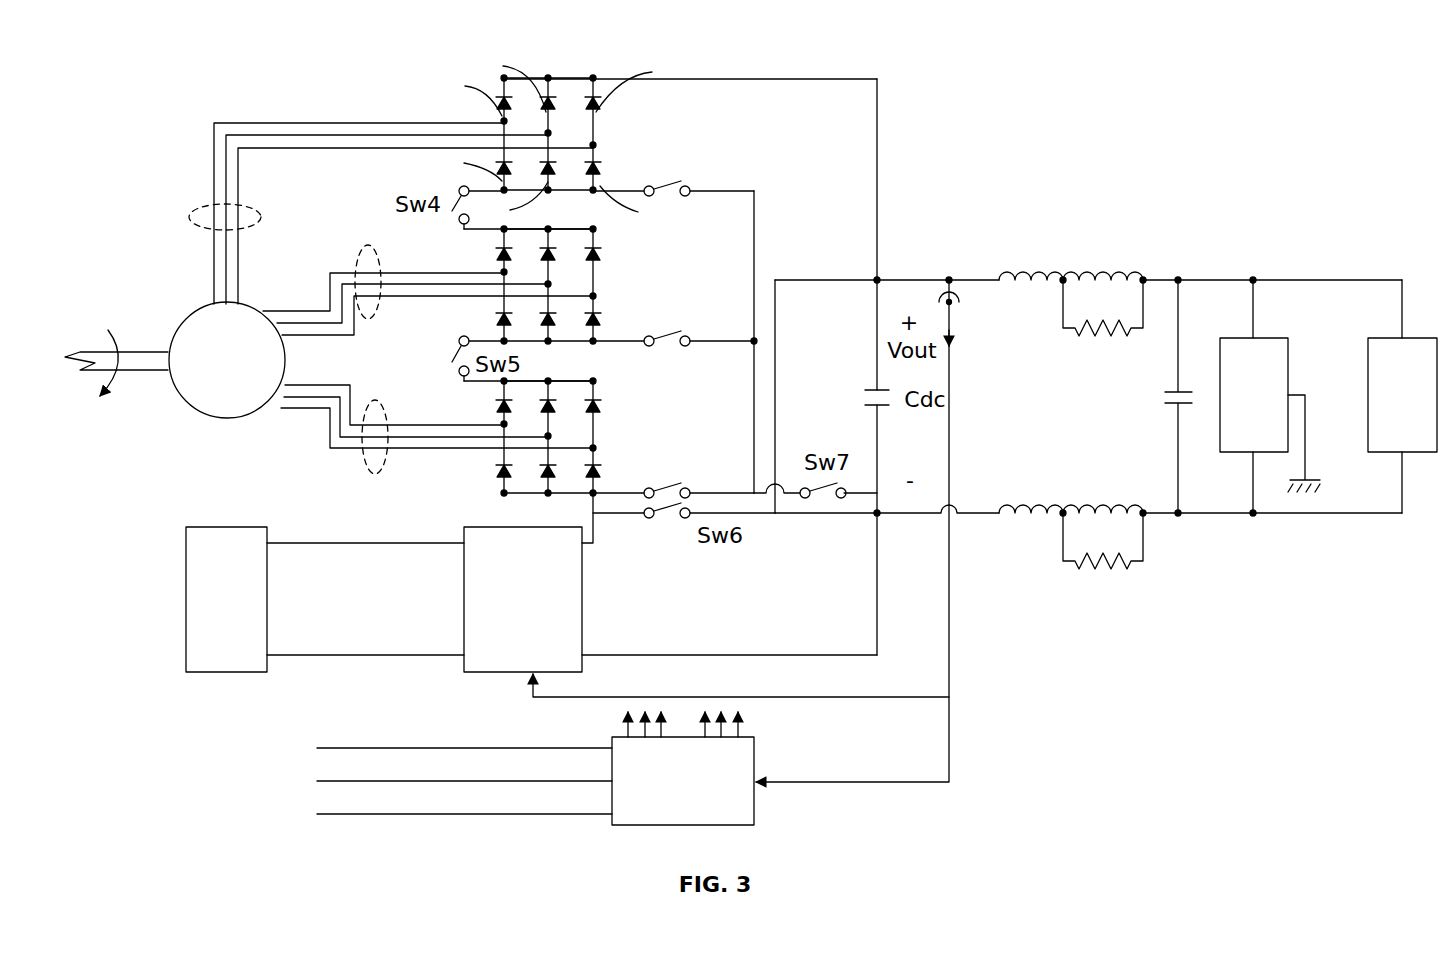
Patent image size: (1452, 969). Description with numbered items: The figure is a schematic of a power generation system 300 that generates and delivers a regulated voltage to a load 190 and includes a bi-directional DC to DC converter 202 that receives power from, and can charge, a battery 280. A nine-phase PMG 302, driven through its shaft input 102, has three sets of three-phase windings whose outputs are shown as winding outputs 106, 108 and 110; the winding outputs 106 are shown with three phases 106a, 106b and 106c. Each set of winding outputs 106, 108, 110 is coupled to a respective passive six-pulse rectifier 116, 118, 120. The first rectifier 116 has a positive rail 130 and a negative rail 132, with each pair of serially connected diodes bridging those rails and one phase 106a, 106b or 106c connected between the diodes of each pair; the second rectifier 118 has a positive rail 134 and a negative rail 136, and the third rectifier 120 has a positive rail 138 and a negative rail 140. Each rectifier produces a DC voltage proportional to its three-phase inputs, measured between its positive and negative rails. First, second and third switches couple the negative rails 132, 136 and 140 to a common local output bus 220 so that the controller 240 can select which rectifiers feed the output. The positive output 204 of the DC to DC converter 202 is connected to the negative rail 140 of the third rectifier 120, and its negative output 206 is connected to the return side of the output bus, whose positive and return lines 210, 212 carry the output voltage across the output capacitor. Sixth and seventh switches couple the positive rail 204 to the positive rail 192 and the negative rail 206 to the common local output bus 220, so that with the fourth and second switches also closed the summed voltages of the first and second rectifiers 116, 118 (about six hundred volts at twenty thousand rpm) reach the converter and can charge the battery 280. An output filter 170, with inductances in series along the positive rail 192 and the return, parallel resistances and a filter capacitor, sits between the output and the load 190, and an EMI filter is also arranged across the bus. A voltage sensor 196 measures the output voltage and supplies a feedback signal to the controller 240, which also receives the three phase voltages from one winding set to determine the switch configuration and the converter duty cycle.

The shaft / mechanical input 102 is at (124, 355).
The winding outputs 106 is at (356, 208).
The phase output 106a is at (225, 166).
The phase output 106b is at (213, 136).
The phase output 106c is at (240, 178).
The winding outputs 108 is at (358, 262).
The winding outputs 110 is at (360, 454).
The first rectifier 116 is at (615, 124).
The second rectifier 118 is at (640, 274).
The third rectifier 120 is at (640, 424).
The positive rail 130 is at (563, 78).
The negative rail 132 is at (618, 191).
The positive rail 134 is at (527, 229).
The negative rail 136 is at (616, 340).
The positive rail 138 is at (565, 381).
The negative rail 140 is at (612, 492).
The output filter 170 is at (1400, 231).
The load 190 is at (1390, 338).
The positive rail 192 is at (903, 280).
The voltage sensor 196 is at (1238, 338).
The DC to DC converter 202 is at (583, 652).
The positive output 204 is at (596, 546).
The negative output 206 is at (725, 655).
The positive DC bus 210 is at (876, 280).
The negative DC bus 212 is at (876, 514).
The common local output bus 220 is at (755, 222).
The controller 240 is at (755, 810).
The battery 280 is at (224, 527).
The power generation system 300 is at (922, 140).
The 9-phase PMG 302 is at (200, 304).